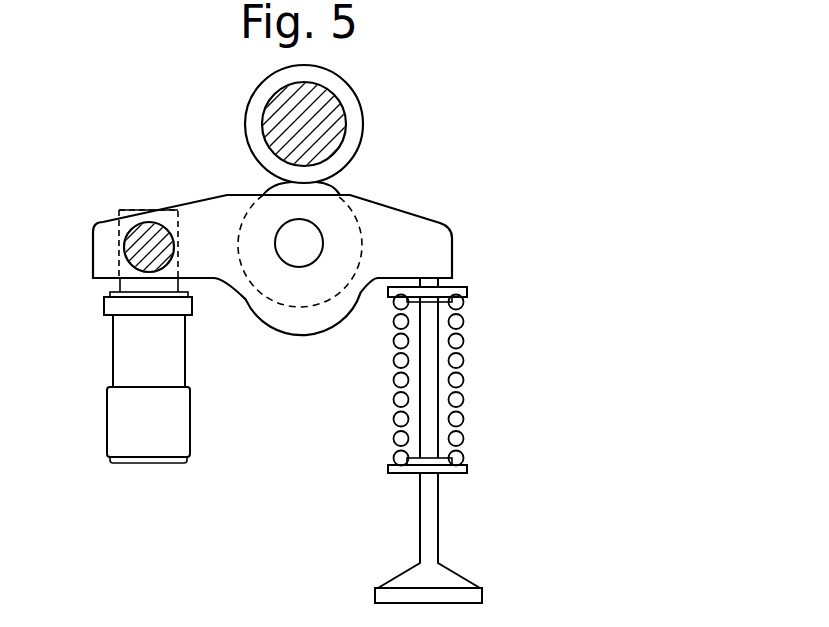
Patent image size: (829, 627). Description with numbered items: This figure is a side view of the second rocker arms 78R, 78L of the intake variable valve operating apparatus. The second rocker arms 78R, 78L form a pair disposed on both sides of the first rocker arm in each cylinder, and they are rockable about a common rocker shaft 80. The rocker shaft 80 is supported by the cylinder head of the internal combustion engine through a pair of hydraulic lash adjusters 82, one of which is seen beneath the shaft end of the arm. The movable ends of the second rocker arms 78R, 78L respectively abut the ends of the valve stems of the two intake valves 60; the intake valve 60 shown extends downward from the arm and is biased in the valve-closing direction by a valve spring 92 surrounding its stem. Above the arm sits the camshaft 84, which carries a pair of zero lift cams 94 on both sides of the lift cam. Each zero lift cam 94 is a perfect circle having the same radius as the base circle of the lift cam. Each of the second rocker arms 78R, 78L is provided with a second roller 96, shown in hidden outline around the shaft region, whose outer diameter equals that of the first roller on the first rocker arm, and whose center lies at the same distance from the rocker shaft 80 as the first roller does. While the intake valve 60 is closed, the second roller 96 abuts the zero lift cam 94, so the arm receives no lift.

The intake valve 60 is at (438, 519).
The second rocker arm 78R is at (299, 231).
The second rocker arm 78L is at (378, 207).
The rocker shaft 80 is at (130, 250).
The hydraulic lash adjuster 82 is at (118, 415).
The camshaft 84 is at (273, 125).
The valve spring 92 is at (464, 398).
The zero lift cam 94 is at (347, 97).
The second roller 96 is at (287, 312).